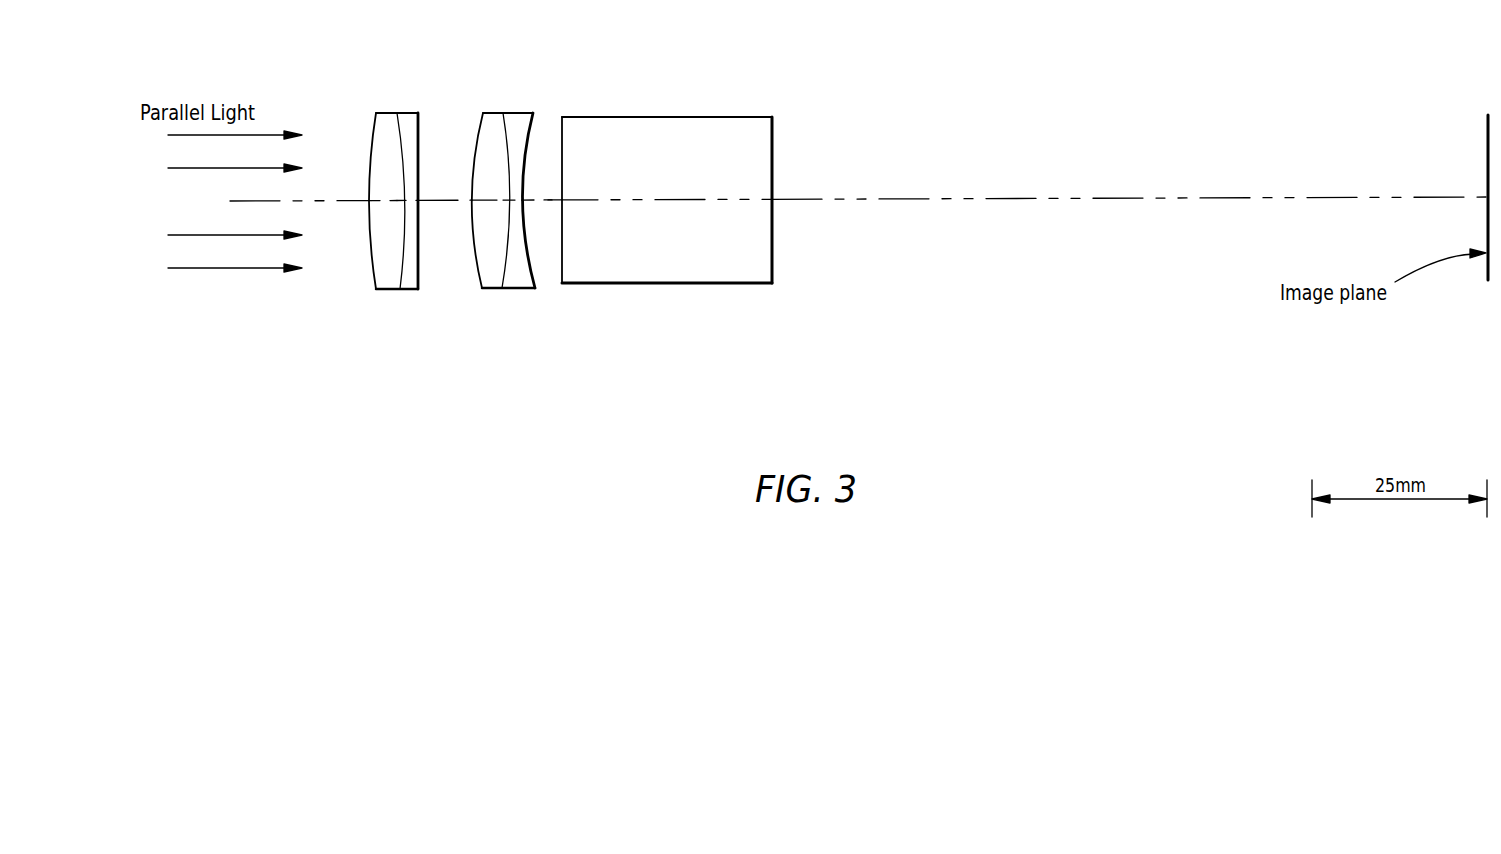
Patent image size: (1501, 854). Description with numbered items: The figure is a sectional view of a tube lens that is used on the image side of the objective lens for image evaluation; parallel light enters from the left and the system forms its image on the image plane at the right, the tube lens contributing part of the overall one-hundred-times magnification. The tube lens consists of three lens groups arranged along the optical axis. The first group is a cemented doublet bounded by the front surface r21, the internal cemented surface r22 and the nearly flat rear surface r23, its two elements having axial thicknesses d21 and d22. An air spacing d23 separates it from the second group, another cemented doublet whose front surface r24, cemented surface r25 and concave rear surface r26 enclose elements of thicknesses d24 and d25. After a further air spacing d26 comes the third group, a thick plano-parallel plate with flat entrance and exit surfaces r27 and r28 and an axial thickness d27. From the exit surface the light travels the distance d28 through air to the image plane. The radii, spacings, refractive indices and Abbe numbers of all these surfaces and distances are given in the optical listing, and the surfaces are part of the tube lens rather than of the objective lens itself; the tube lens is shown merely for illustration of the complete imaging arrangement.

The first surface of first cemented doublet r21 is at (373, 134).
The cemented surface of first cemented doublet r22 is at (398, 128).
The rear surface of first cemented doublet r23 is at (419, 134).
The first surface of second cemented doublet r24 is at (477, 135).
The cemented surface of second cemented doublet r25 is at (503, 136).
The rear surface of second cemented doublet r26 is at (533, 136).
The entrance surface of plano-parallel plate r27 is at (560, 138).
The exit surface of plano-parallel plate r28 is at (772, 137).
The thickness of first element of first doublet d21 is at (388, 203).
The thickness of second element of first doublet d22 is at (399, 200).
The air spacing between first and second doublets d23 is at (455, 203).
The thickness of first element of second doublet d24 is at (498, 203).
The thickness of second element of second doublet d25 is at (505, 200).
The air spacing between second doublet and plate d26 is at (539, 205).
The thickness of plano-parallel plate d27 is at (715, 202).
The distance from plate to image plane d28 is at (1030, 200).